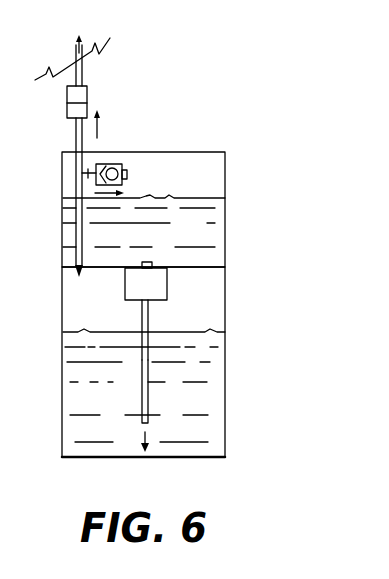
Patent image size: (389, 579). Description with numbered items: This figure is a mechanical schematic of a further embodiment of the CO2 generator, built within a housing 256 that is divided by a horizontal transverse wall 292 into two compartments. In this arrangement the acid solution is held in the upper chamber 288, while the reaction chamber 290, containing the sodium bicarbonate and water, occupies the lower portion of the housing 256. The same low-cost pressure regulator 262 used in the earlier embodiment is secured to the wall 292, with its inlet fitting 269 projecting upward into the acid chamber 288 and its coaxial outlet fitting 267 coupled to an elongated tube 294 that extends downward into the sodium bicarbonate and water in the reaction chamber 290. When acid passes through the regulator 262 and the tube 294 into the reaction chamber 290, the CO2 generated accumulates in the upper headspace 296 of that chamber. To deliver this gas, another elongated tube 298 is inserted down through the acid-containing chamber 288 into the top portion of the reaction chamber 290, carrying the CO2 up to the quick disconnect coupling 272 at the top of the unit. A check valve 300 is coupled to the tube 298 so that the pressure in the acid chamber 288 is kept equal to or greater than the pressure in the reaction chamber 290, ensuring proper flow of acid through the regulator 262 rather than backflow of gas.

The housing 256 is at (226, 225).
The pressure regulator 262 is at (167, 285).
The outlet fitting 267 is at (150, 310).
The inlet fitting 269 is at (152, 265).
The quick disconnect coupling 272 is at (88, 99).
The upper chamber 288 is at (203, 158).
The reaction chamber 290 is at (217, 413).
The horizontal transverse wall 292 is at (212, 270).
The elongated tube 294 is at (148, 395).
The upper headspace 296 is at (70, 310).
The elongated tube 298 is at (77, 143).
The check valve 300 is at (113, 163).